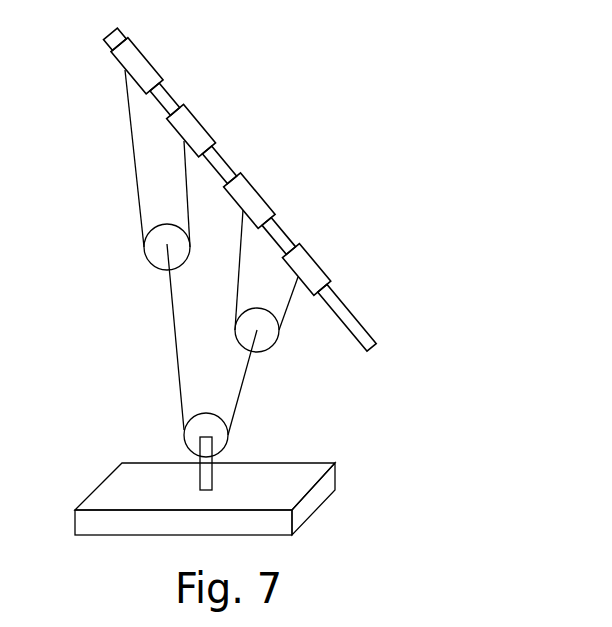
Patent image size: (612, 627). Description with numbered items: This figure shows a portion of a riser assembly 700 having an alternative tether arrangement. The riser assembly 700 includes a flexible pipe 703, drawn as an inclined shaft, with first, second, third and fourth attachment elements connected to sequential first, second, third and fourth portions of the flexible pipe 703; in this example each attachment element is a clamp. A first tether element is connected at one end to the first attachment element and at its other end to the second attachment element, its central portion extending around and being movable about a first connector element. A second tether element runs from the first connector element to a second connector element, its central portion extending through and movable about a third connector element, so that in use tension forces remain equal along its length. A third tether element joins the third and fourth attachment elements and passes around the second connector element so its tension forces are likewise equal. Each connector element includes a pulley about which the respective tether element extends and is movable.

The riser assembly 700 is at (360, 122).
The flexible pipe 703 is at (287, 232).